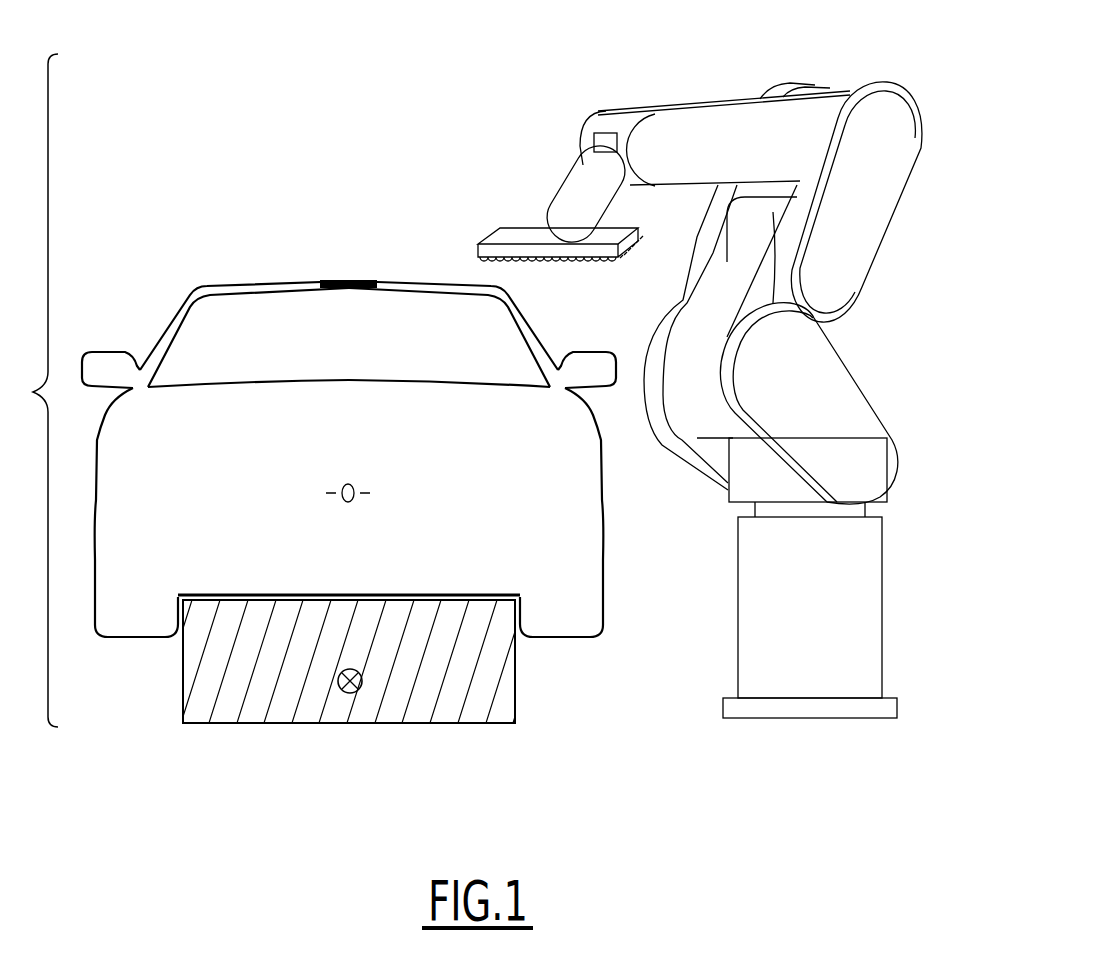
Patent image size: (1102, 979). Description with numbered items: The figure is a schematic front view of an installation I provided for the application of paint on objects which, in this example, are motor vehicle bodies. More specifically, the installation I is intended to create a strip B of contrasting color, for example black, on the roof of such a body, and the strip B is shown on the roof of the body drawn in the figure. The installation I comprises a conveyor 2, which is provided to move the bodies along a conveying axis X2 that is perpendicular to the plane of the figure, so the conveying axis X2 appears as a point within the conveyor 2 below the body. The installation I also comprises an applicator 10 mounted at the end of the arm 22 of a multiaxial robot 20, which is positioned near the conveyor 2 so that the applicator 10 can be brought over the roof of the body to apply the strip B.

The installation I is at (36, 390).
The conveyor 2 is at (430, 690).
The conveying axis X2 is at (360, 687).
The strip B is at (342, 278).
The applicator 10 is at (522, 235).
The multiaxial robot 20 is at (736, 376).
The arm 22 is at (693, 147).